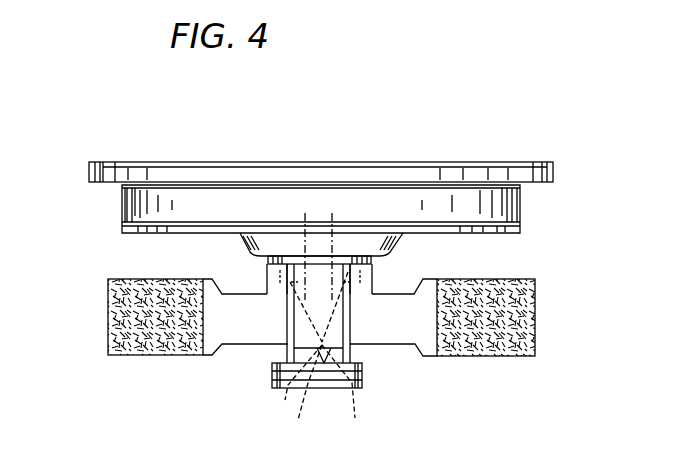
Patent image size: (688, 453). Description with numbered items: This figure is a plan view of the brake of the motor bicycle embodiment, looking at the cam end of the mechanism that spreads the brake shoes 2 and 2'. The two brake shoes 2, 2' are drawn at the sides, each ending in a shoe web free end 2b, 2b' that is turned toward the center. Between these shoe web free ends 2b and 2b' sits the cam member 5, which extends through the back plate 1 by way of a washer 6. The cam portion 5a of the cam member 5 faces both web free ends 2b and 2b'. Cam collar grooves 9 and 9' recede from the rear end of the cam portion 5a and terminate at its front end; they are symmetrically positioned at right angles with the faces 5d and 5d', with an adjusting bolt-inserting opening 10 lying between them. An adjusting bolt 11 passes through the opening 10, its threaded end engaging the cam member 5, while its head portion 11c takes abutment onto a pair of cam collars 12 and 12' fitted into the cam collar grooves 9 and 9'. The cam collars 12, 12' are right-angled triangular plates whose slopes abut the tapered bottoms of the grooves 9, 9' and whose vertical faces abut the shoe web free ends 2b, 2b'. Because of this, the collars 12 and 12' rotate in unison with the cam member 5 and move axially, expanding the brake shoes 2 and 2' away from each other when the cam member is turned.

The back plate 1 is at (300, 162).
The brake shoe 2 is at (153, 346).
The brake shoe 2' is at (486, 348).
The shoe web free end 2b is at (235, 335).
The shoe web free end 2b' is at (402, 333).
The cam member 5 is at (363, 380).
The cam portion 5a is at (288, 334).
The face 5d is at (260, 280).
The face 5d' is at (376, 323).
The washer 6 is at (268, 259).
The cam collar groove 9 is at (297, 383).
The cam collar groove 9' is at (344, 393).
The adjusting bolt-inserting opening 10 is at (304, 393).
The adjusting bolt 11 is at (265, 383).
The head portion 11c is at (320, 388).
The cam collar 12 is at (265, 313).
The cam collar 12' is at (376, 313).